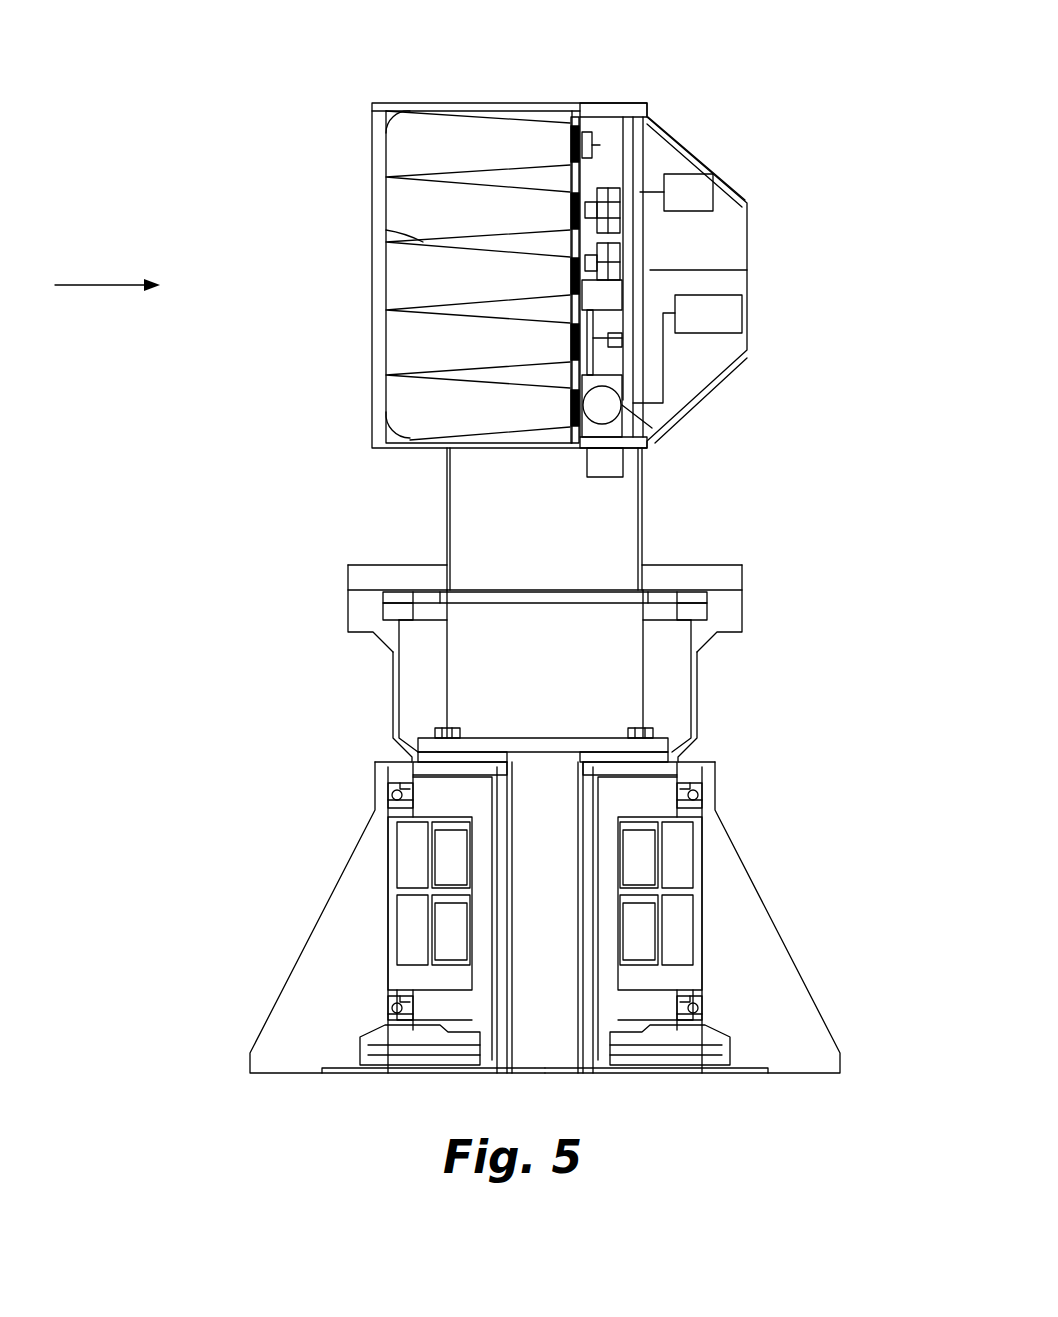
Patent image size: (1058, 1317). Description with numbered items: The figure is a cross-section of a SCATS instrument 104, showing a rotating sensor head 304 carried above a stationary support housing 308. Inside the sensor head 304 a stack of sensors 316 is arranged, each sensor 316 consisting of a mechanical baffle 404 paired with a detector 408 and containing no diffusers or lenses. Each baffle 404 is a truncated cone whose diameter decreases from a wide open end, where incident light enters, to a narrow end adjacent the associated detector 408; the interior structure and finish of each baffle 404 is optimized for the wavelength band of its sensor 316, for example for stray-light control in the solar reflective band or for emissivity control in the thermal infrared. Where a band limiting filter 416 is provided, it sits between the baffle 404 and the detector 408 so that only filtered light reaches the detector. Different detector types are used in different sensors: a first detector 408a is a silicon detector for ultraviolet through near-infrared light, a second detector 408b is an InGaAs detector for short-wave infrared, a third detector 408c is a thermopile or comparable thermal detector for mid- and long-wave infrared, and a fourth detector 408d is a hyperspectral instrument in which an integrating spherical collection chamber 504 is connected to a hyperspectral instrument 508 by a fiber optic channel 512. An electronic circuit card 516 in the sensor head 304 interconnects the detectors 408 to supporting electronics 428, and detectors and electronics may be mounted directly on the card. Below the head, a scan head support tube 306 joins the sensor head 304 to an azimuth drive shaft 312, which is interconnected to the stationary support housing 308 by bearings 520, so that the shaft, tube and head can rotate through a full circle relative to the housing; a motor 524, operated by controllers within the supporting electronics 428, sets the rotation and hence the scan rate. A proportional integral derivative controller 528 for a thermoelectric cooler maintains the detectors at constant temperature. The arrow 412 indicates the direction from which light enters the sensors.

The SCATS instrument 104 is at (768, 110).
The sensor head 304 is at (465, 102).
The scan head support tube 306 is at (641, 540).
The stationary support housing 308 is at (773, 965).
The azimuth drive shaft 312 is at (668, 693).
The sensor 316 is at (372, 150).
The mechanical baffle 404 is at (390, 122).
The detector 408 is at (593, 140).
The first detector 408a is at (650, 140).
The second detector 408b is at (650, 242).
The third detector 408c is at (593, 360).
The fourth detector 408d is at (628, 435).
The viewing direction 412 is at (103, 280).
The band limiting filter 416 is at (570, 132).
The supporting electronics 428 is at (697, 195).
The integrating spherical collection chamber 504 is at (622, 410).
The hyperspectral instrument 508 is at (742, 315).
The fiber optic channel 512 is at (597, 342).
The electronic circuit card 516 is at (652, 120).
The bearings 520 is at (702, 792).
The motor 524 is at (678, 868).
The proportional integral derivative (PID) controller 528 is at (605, 478).